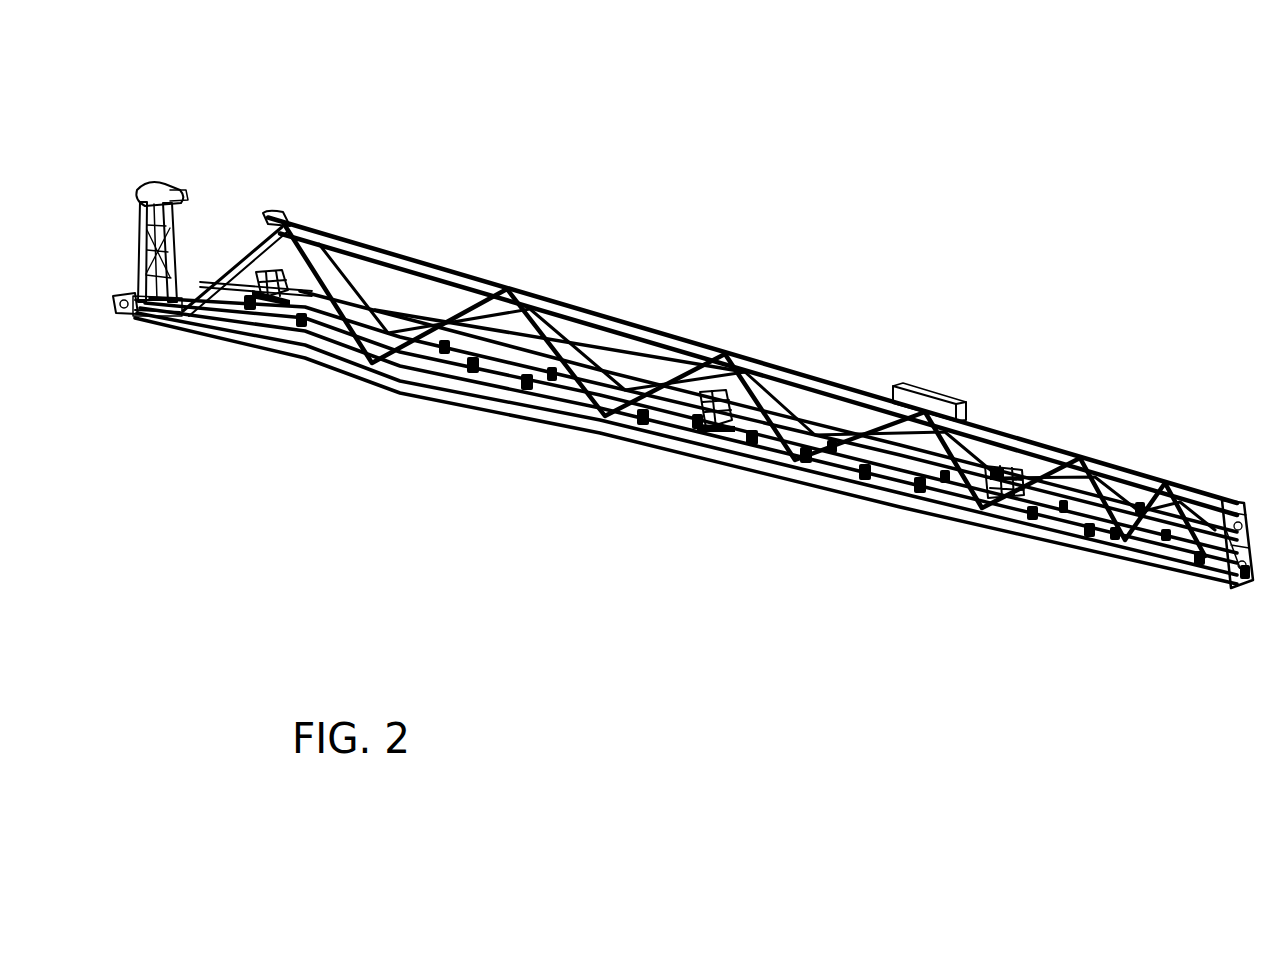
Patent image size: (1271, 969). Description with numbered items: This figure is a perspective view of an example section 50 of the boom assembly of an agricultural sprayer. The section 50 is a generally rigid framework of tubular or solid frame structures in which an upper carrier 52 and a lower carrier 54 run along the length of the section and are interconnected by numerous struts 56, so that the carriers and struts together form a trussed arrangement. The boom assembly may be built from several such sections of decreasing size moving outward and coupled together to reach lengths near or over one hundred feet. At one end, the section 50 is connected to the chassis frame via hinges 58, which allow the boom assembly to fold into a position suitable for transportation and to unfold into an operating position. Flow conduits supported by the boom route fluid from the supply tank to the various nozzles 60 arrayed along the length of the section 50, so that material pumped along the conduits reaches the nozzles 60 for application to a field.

The section 50 is at (346, 147).
The upper carrier 52 is at (587, 308).
The lower carrier 54 is at (490, 360).
The struts 56 is at (345, 288).
The hinges 58 is at (160, 187).
The nozzles 60 is at (303, 327).